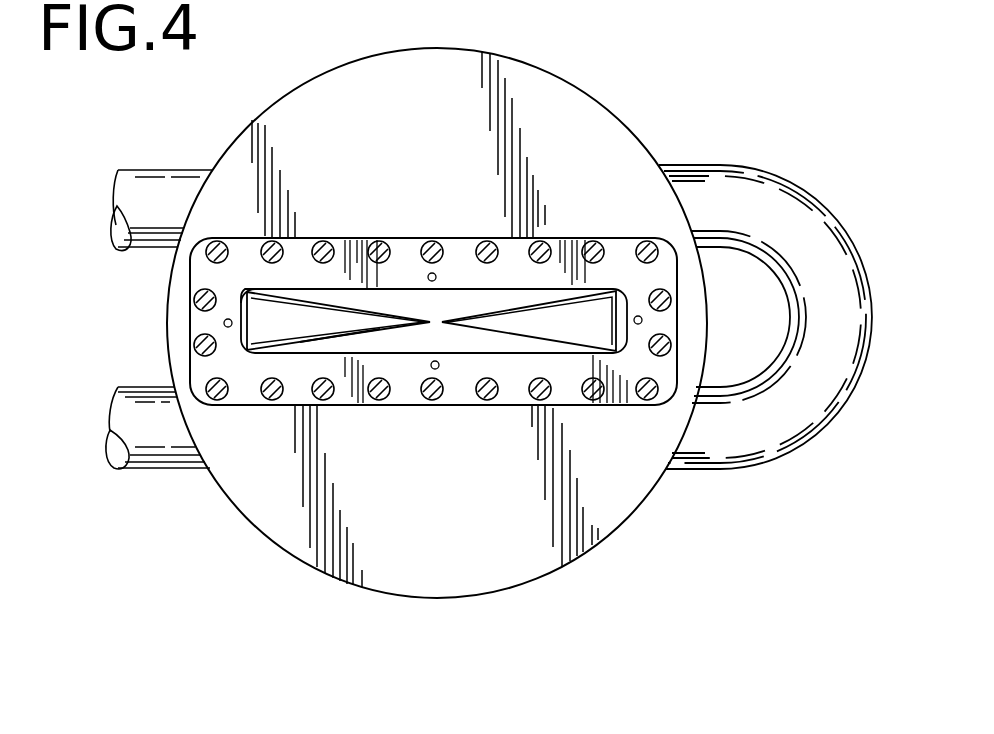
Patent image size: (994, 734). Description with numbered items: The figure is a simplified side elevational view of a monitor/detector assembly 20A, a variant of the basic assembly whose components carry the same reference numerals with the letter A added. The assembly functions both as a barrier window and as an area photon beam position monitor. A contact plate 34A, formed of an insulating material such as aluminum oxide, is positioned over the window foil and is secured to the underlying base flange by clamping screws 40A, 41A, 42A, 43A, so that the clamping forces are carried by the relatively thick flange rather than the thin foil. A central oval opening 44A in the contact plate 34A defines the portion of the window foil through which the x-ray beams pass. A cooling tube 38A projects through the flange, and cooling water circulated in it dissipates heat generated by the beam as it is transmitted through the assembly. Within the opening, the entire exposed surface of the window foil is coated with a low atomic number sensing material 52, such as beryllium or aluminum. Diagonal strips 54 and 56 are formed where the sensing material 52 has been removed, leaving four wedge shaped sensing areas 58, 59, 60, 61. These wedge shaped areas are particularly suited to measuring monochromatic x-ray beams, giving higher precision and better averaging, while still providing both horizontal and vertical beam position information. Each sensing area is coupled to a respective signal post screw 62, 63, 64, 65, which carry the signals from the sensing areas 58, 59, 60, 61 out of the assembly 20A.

The monitor/detector assembly 20A is at (772, 526).
The contact plate 34A is at (297, 370).
The cooling tube 38A is at (818, 202).
The clamping screw 40A is at (432, 241).
The clamping screw 41A is at (203, 297).
The clamping screw 42A is at (200, 348).
The clamping screw 43A is at (437, 400).
The central oval opening 44A is at (612, 289).
The sensing material 52 is at (355, 298).
The diagonal strip 54 is at (290, 290).
The diagonal strip 56 is at (503, 297).
The wedge shaped sensing area 58 is at (456, 287).
The wedge shaped sensing area 59 is at (268, 320).
The wedge shaped sensing area 60 is at (405, 340).
The wedge shaped sensing area 61 is at (583, 325).
The signal post screw 62 is at (428, 276).
The signal post screw 63 is at (224, 323).
The signal post screw 64 is at (439, 367).
The signal post screw 65 is at (642, 320).